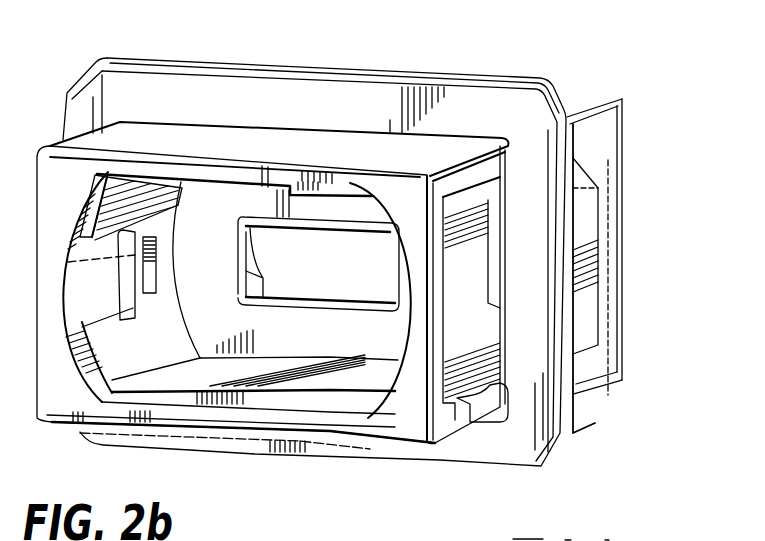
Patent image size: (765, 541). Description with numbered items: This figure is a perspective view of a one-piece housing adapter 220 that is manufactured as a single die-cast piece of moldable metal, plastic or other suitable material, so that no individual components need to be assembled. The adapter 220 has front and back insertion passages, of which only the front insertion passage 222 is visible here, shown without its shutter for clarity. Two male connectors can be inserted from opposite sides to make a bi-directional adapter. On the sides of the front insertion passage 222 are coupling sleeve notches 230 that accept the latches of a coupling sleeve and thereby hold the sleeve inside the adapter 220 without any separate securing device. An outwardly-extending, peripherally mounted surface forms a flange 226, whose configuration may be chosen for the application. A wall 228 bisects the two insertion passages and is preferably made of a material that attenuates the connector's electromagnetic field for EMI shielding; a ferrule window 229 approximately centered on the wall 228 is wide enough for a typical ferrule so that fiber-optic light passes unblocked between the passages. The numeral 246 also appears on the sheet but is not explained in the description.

The one-piece housing adapter 220 is at (617, 72).
The front insertion passage 222 is at (222, 372).
The flange 226 is at (476, 76).
The wall 228 is at (320, 347).
The ferrule window 229 is at (355, 272).
The coupling sleeve notches 230 is at (155, 263).
The component 246 is at (616, 528).